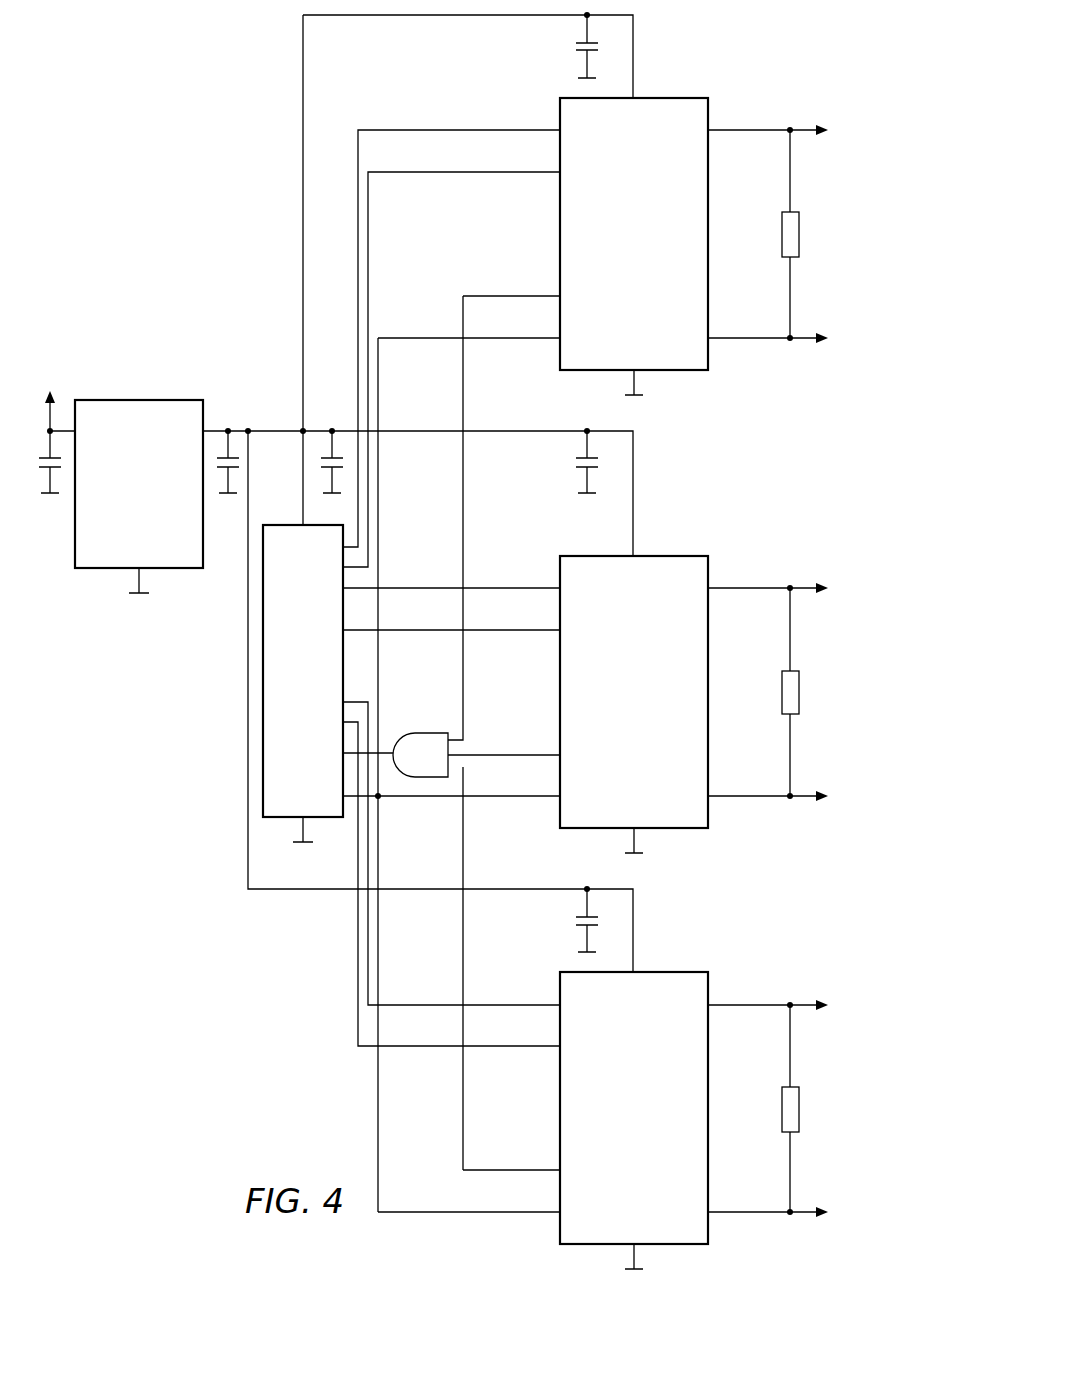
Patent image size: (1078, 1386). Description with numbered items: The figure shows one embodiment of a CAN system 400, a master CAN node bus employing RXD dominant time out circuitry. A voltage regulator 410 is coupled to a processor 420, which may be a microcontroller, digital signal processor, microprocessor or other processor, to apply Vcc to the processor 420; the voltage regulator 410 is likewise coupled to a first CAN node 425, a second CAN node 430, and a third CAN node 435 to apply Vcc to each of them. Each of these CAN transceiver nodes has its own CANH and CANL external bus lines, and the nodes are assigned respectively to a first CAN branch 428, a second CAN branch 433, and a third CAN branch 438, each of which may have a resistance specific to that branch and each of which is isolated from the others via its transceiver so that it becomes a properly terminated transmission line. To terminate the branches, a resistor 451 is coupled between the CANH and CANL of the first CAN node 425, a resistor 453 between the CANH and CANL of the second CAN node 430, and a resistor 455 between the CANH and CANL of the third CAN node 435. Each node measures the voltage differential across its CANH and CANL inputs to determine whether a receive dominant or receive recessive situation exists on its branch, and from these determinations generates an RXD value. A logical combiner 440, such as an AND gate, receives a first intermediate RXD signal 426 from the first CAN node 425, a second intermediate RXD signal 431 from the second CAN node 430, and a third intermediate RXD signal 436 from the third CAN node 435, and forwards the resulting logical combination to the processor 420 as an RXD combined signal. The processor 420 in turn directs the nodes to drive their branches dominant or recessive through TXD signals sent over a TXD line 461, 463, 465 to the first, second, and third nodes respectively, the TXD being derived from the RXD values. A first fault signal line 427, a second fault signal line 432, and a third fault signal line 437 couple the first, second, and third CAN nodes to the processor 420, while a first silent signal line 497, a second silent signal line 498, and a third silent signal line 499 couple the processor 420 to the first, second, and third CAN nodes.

The CAN system 400 is at (228, 292).
The voltage regulator 410 is at (122, 523).
The processor 420 is at (286, 761).
The first CAN node 425 is at (617, 273).
The first intermediate RXD signal 426 is at (493, 296).
The first fault signal line 427 is at (473, 173).
The first CAN branch 428 is at (808, 234).
The second CAN node 430 is at (617, 731).
The second intermediate RXD signal 431 is at (498, 753).
The second fault signal line 432 is at (524, 631).
The second CAN branch 433 is at (808, 692).
The third CAN node 435 is at (617, 1148).
The third intermediate RXD signal 436 is at (504, 1170).
The third fault signal line 437 is at (514, 1047).
The third CAN branch 438 is at (808, 1108).
The logical combiner 440 is at (425, 733).
The resistor 451 is at (782, 235).
The resistor 453 is at (782, 692).
The resistor 455 is at (782, 1110).
The TXD line 461 is at (508, 339).
The TXD line 463 is at (512, 797).
The TXD line 465 is at (511, 1213).
The first silent signal line 497 is at (509, 129).
The second silent signal line 498 is at (516, 588).
The third silent signal line 499 is at (522, 1005).